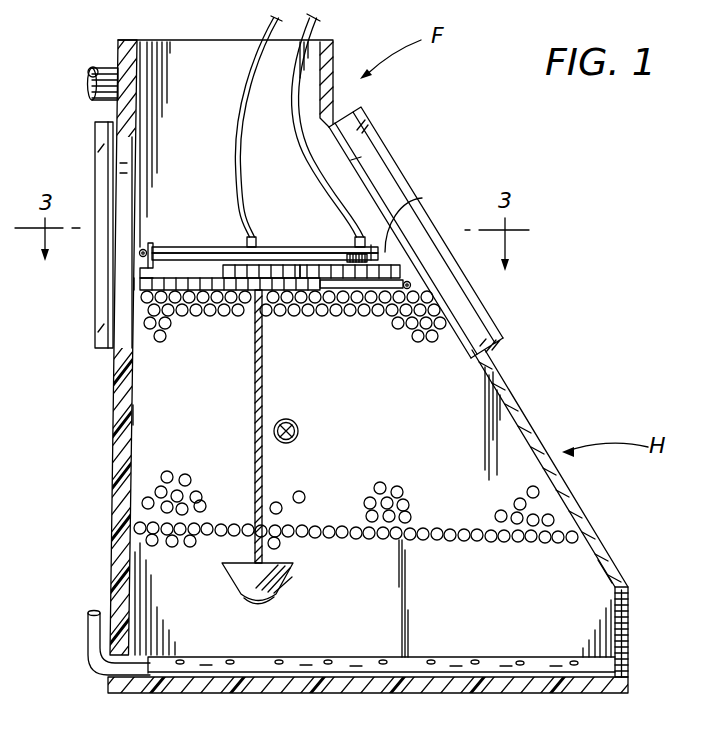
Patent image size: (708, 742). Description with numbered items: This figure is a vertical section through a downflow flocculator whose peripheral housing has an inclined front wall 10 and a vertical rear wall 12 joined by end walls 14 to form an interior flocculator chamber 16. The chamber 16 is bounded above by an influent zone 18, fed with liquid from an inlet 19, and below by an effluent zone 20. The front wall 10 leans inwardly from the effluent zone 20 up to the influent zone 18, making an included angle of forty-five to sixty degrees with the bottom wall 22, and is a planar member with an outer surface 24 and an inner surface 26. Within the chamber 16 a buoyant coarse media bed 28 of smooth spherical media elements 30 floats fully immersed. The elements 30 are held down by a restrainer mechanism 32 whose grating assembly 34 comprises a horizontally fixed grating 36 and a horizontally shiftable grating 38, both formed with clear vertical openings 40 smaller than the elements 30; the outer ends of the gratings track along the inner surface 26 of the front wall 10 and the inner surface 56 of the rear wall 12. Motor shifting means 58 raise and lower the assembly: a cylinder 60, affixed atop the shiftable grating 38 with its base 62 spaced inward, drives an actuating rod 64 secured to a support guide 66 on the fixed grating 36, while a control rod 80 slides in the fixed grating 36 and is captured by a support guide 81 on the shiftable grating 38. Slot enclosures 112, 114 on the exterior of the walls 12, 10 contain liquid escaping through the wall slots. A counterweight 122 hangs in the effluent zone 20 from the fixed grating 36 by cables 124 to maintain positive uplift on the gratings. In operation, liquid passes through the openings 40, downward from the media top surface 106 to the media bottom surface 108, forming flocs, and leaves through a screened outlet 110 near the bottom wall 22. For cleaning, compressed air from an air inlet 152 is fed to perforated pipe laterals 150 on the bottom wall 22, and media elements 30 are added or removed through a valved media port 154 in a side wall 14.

The front wall 10 is at (588, 510).
The rear wall 12 is at (118, 455).
The end walls 14 is at (158, 578).
The flocculator chamber 16 is at (396, 424).
The influent zone 18 is at (207, 114).
The inlet 19 is at (110, 73).
The effluent zone 20 is at (365, 643).
The bottom wall 22 is at (340, 693).
The outer surface 24 is at (620, 558).
The inner surface 26 is at (483, 403).
The buoyant coarse media bed 28 is at (212, 448).
The media elements 30 is at (520, 500).
The restrainer mechanism 32 is at (300, 250).
The grating assembly 34 is at (126, 283).
The fixed grating 36 is at (216, 291).
The shiftable grating 38 is at (328, 272).
The vertical openings 40 is at (295, 272).
The inner surface 56 is at (133, 415).
The motor shifting means 58 is at (273, 238).
The cylinder 60 is at (333, 247).
The base 62 is at (423, 203).
The actuating rod 64 is at (217, 247).
The support guide 66 is at (183, 215).
The control rod 80 is at (359, 283).
The support guide 81 is at (406, 290).
The media top surface 106 is at (430, 297).
The media bed bottom surface 108 is at (497, 542).
The outlet 110 is at (630, 625).
The slot enclosure 112 is at (97, 162).
The slot enclosure 114 is at (500, 315).
The counterweight 122 is at (283, 583).
The cables 124 is at (262, 460).
The perforated pipe laterals 150 is at (568, 631).
The air inlet 152 is at (97, 643).
The media port 154 is at (313, 396).